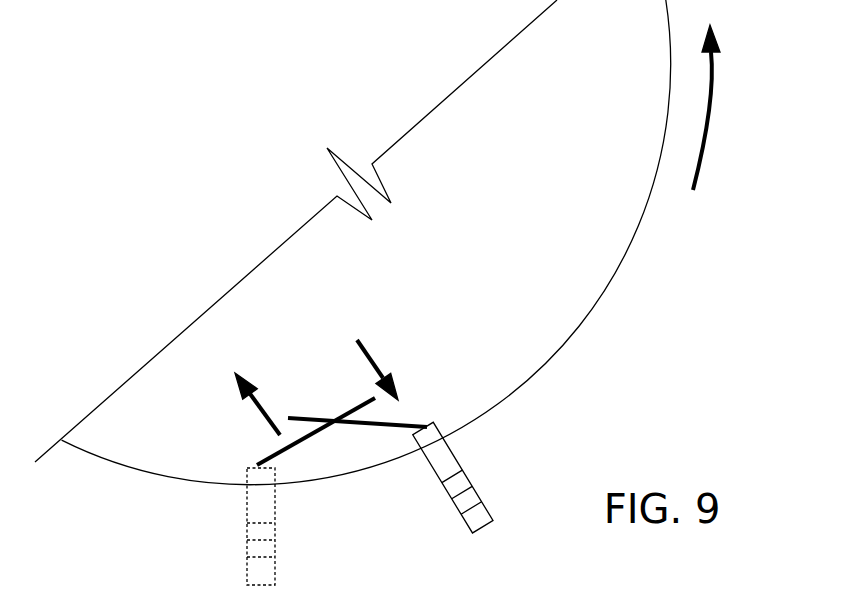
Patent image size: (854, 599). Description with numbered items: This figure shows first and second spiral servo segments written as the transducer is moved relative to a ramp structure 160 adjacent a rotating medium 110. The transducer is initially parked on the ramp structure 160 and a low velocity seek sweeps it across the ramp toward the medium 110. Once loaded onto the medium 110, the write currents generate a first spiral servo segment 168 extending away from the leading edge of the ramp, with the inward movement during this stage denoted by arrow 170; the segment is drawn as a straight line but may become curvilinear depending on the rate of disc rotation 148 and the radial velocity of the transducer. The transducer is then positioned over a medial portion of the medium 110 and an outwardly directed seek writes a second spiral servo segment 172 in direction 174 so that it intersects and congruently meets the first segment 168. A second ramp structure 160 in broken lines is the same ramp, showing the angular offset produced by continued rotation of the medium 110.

The medium 110 is at (454, 123).
The disc rotation 148 is at (712, 115).
The ramp structure 160 is at (277, 550).
The first spiral servo segment 168 is at (300, 418).
The arrow 170 is at (263, 417).
The second spiral servo segment 172 is at (358, 400).
The direction 174 is at (368, 345).